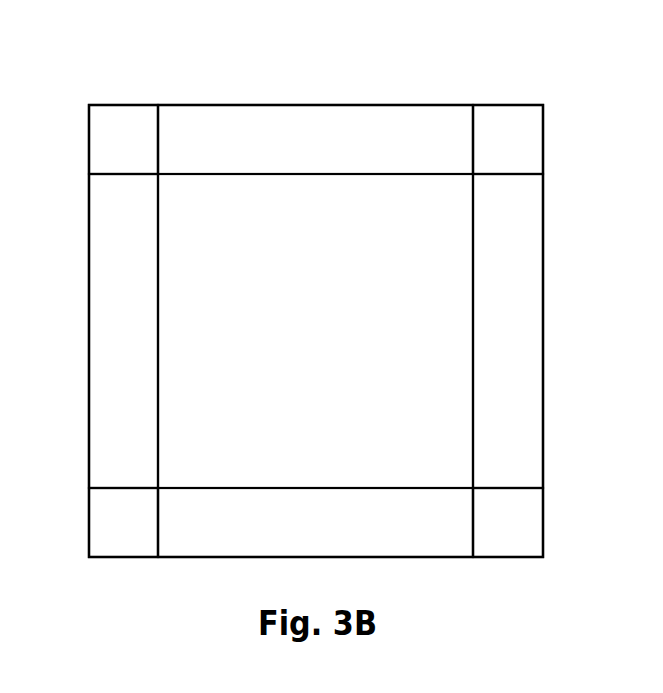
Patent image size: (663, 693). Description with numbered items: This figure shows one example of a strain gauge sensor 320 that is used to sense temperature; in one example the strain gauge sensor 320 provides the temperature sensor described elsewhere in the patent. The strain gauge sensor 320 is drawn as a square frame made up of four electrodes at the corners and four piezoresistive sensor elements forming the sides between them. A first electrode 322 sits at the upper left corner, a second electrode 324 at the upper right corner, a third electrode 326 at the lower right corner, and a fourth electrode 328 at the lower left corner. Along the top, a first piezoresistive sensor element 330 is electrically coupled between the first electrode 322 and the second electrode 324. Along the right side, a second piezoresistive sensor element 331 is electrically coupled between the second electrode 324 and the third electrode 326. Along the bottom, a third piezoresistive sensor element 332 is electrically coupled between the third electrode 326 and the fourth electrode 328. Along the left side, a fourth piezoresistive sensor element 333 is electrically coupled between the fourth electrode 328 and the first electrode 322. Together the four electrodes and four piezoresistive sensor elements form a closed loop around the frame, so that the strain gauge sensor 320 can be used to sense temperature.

The strain gauge sensor 320 is at (455, 62).
The first electrode 322 is at (121, 113).
The second electrode 324 is at (505, 115).
The third electrode 326 is at (523, 537).
The fourth electrode 328 is at (107, 538).
The first piezoresistive sensor element 330 is at (296, 108).
The second piezoresistive sensor element 331 is at (525, 338).
The third piezoresistive sensor element 332 is at (285, 500).
The fourth piezoresistive sensor element 333 is at (108, 340).